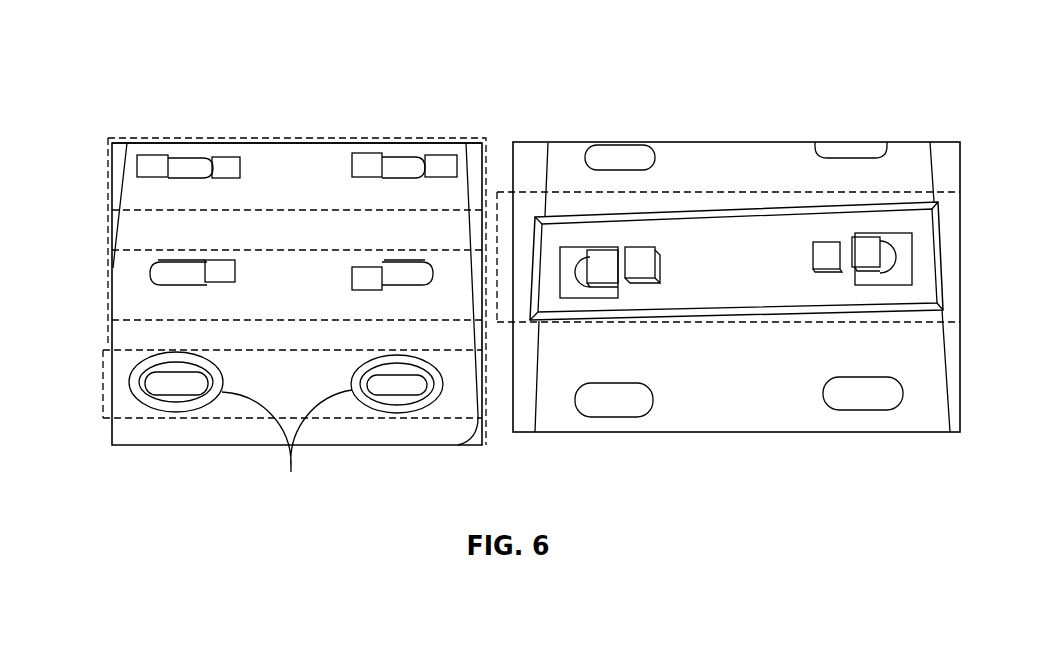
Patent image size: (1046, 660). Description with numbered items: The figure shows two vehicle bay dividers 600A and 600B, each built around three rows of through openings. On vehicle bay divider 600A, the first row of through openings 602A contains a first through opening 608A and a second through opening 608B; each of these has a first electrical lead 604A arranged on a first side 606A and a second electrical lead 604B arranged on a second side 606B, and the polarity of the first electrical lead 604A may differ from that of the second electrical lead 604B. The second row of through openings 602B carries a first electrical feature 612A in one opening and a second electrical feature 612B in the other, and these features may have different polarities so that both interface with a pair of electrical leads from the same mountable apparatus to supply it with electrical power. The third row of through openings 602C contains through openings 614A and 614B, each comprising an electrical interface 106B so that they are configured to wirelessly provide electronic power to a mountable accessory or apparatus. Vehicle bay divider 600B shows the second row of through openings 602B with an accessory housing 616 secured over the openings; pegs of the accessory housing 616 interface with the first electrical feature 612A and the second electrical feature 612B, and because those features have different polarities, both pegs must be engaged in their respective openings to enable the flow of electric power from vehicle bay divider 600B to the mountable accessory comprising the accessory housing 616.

The vehicle bay divider 600A is at (164, 30).
The vehicle bay divider 600B is at (651, 56).
The first row of through openings 602A is at (108, 173).
The second row of through openings 602B is at (455, 322).
The third row of through openings 602C is at (102, 382).
The first electrical lead 604A is at (148, 167).
The second electrical lead 604B is at (218, 165).
The first side 606A is at (137, 167).
The second side 606B is at (260, 157).
The first through opening 608A is at (195, 165).
The second through opening 608B is at (413, 165).
The first electrical feature 612A is at (222, 270).
The second electrical feature 612B is at (363, 275).
The first through opening 614A is at (178, 388).
The through opening 614B is at (400, 390).
The electrical interface 106B is at (287, 445).
The accessory housing 616 is at (715, 279).